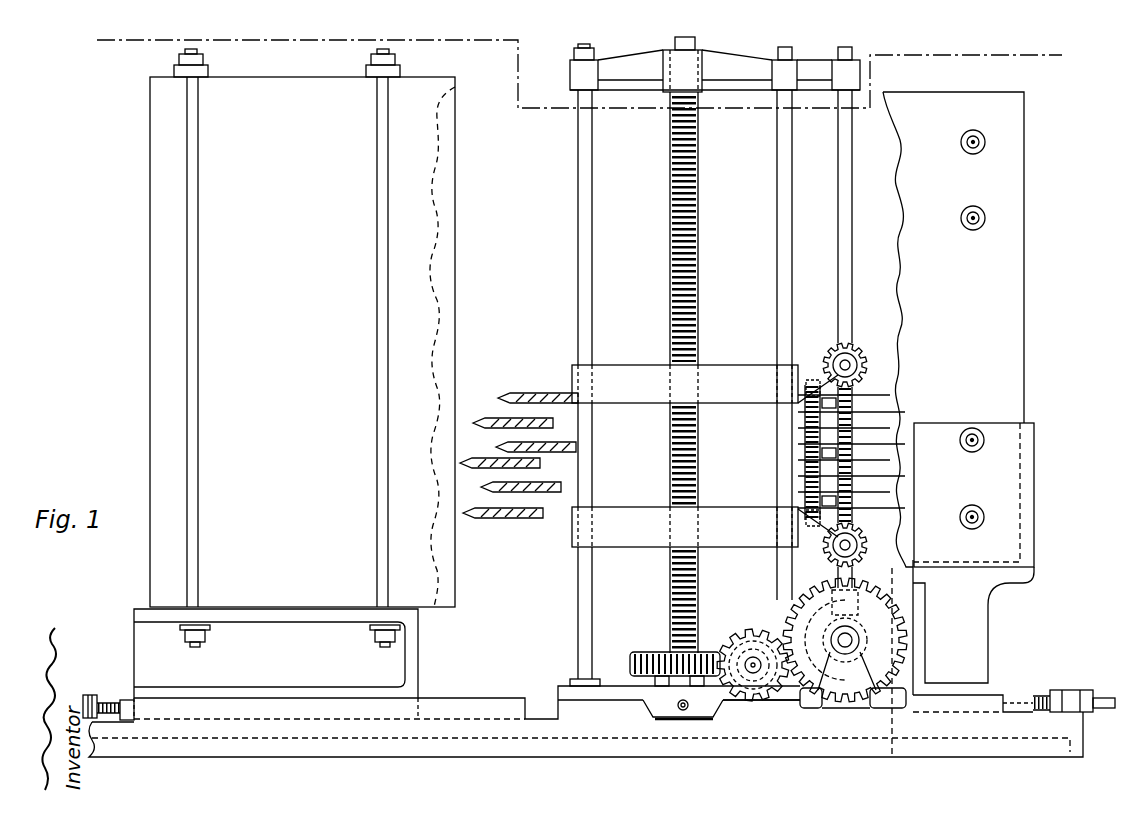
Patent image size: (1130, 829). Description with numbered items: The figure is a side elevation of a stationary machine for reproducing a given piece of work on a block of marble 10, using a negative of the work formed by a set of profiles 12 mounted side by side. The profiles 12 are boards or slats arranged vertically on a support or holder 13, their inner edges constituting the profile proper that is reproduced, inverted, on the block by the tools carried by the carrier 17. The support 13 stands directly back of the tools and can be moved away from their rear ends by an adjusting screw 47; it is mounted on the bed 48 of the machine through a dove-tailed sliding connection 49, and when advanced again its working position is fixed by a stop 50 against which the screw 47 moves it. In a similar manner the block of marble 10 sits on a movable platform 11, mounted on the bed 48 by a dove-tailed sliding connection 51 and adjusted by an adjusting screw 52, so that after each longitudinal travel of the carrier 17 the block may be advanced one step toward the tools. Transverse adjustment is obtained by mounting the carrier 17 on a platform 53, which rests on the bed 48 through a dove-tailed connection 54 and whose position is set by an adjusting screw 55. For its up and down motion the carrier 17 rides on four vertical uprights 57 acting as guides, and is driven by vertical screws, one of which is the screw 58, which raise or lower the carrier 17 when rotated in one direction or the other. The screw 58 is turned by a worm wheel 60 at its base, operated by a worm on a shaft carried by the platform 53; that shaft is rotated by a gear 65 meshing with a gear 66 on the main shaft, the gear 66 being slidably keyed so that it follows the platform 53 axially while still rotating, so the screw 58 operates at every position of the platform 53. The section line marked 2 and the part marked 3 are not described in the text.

The section line 2- 2 is at (575, 69).
The shaft 3 is at (900, 673).
The block of marble 10 is at (167, 388).
The movable platform 11 is at (410, 650).
The profiles 12 is at (1005, 310).
The support or holder 13 is at (1030, 520).
The carrier 17 is at (620, 480).
The adjusting screw 47 is at (1040, 700).
The bed 48 is at (950, 722).
The dove-tailed sliding connection 49 is at (993, 705).
The stop 50 is at (908, 695).
The dove-tailed sliding connection 51 is at (160, 715).
The adjusting screw 52 is at (108, 705).
The platform 53 is at (627, 695).
The dove-tailed connection 54 is at (710, 705).
The adjusting screw 55 is at (681, 712).
The vertical uprights 57 is at (592, 285).
The vertical screw 58 is at (700, 320).
The worm wheel 60 is at (650, 655).
The gear 65 is at (768, 640).
The gear 66 is at (895, 623).